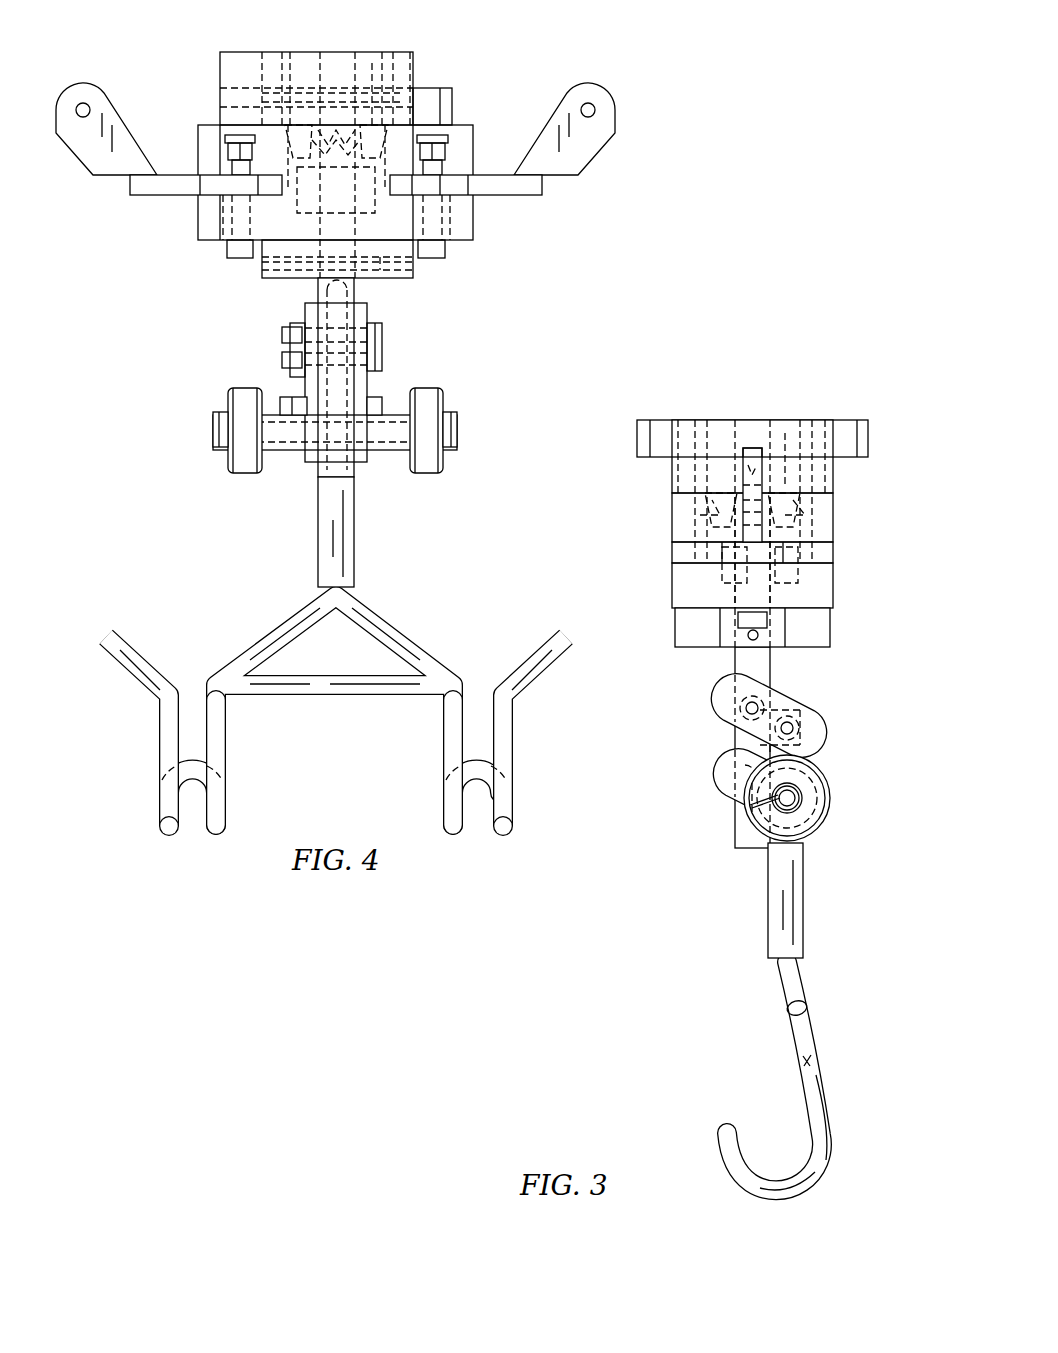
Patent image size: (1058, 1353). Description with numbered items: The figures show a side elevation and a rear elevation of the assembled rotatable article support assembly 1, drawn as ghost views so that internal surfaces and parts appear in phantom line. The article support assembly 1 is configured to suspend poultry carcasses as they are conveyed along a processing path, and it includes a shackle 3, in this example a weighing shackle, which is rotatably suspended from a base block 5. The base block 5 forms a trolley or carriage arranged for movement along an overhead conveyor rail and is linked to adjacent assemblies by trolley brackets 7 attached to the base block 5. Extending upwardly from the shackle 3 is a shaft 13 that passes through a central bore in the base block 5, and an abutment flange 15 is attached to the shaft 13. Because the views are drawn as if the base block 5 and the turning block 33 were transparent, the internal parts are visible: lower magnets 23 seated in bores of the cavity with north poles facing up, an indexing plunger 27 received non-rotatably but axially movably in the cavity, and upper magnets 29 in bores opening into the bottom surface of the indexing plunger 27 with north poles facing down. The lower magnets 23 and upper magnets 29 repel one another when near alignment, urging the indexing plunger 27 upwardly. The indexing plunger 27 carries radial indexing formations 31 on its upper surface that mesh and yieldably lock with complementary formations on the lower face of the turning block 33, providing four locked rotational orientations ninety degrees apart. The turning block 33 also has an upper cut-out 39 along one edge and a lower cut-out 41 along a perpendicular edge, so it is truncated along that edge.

In FIG. 4, the article support assembly 1 is at (362, 422).
In FIG. 3, the article support assembly 1 is at (754, 748).
In FIG. 4, the shackle 3 is at (353, 527).
In FIG. 3, the shackle 3 is at (803, 895).
In FIG. 4, the base block 5 is at (210, 212).
In FIG. 3, the base block 5 is at (805, 595).
In FIG. 4, the trolley brackets 7 is at (78, 83).
In FIG. 4, the shaft 13 is at (357, 288).
In FIG. 3, the shaft 13 is at (770, 662).
In FIG. 4, the abutment flange 15 is at (282, 245).
In FIG. 3, the abutment flange 15 is at (805, 627).
In FIG. 4, the lower magnets 23 is at (303, 197).
In FIG. 3, the lower magnets 23 is at (728, 572).
In FIG. 4, the indexing plunger 27 is at (287, 157).
In FIG. 3, the indexing plunger 27 is at (712, 532).
In FIG. 4, the upper magnets 29 is at (373, 167).
In FIG. 3, the upper magnets 29 is at (790, 553).
In FIG. 4, the indexing formations 31 is at (372, 63).
In FIG. 3, the indexing formations 31 is at (785, 433).
In FIG. 4, the turning block 33 is at (243, 80).
In FIG. 3, the turning block 33 is at (720, 430).
In FIG. 4, the upper cut-out 39 is at (430, 88).
In FIG. 3, the lower cut-out 41 is at (672, 470).